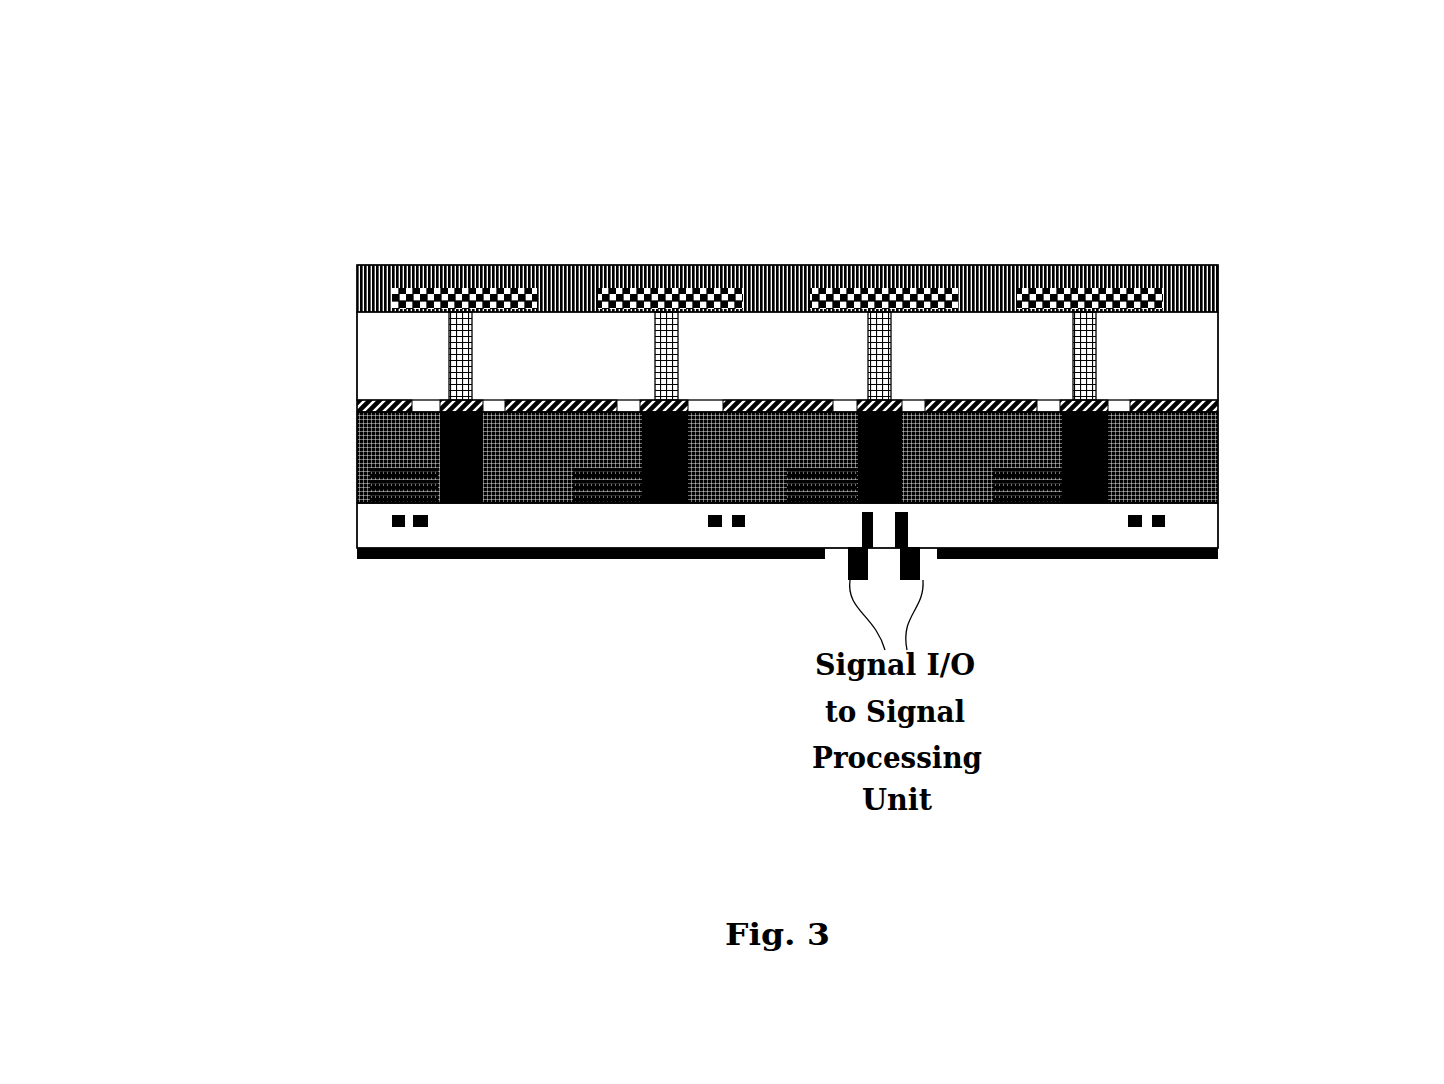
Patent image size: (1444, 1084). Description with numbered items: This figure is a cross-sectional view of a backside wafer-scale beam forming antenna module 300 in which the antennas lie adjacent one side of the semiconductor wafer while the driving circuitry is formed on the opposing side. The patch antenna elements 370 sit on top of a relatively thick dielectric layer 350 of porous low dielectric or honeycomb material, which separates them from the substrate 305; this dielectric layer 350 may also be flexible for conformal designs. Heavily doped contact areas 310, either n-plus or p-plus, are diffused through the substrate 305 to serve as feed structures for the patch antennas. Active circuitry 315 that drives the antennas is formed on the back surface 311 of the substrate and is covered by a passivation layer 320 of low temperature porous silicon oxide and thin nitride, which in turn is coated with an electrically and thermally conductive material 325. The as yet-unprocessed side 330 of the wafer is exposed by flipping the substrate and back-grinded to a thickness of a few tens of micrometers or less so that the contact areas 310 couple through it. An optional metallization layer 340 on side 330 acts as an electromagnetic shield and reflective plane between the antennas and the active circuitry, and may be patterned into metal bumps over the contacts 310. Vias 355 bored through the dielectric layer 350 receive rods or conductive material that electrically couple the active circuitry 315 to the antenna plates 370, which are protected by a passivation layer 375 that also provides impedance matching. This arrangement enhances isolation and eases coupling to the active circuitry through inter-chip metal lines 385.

The wafer-scale antenna module 300 is at (1019, 148).
The substrate 305 is at (357, 458).
The heavily doped contact areas 310 is at (1087, 503).
The back surface 311 is at (357, 503).
The active circuitry 315 is at (610, 503).
The passivation layer 320 is at (357, 525).
The electrically and thermally conductive material 325 is at (593, 560).
The unprocessed side 330 is at (357, 411).
The metallization layer 340 is at (1362, 420).
The dielectric layer 350 is at (357, 355).
The vias 355 is at (1094, 389).
The patch antenna elements 370 is at (690, 263).
The passivation layer 375 is at (357, 288).
The inter-chip metal lines 385 is at (908, 530).